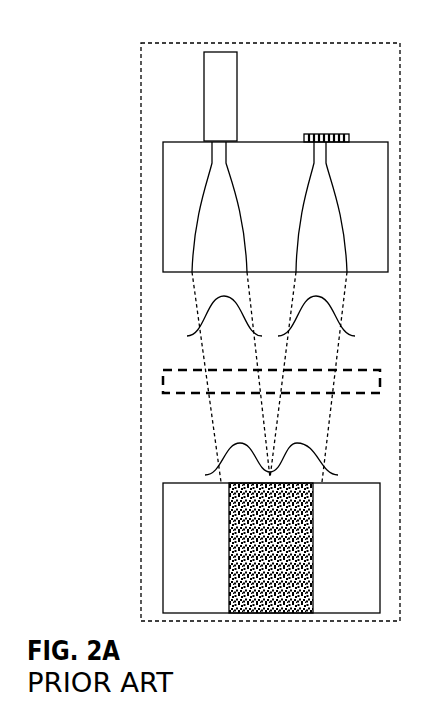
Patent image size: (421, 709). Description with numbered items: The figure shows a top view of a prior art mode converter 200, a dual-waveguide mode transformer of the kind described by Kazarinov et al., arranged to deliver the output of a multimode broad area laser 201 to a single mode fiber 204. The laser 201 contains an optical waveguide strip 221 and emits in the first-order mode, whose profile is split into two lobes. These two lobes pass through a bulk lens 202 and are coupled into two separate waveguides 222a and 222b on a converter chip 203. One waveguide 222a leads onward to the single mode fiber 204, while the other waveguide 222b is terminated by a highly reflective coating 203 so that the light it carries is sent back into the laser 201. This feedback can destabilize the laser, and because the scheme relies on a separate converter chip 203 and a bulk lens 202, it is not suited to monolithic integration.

The mode converter 200 is at (212, 622).
The multimode broad area laser 201 is at (155, 540).
The lens 202 is at (155, 386).
The converter chip 203 is at (312, 125).
The single mode fiber 204 is at (195, 92).
The optical waveguide strip 221 is at (221, 588).
The waveguide 222a is at (188, 225).
The waveguide 222b is at (297, 202).